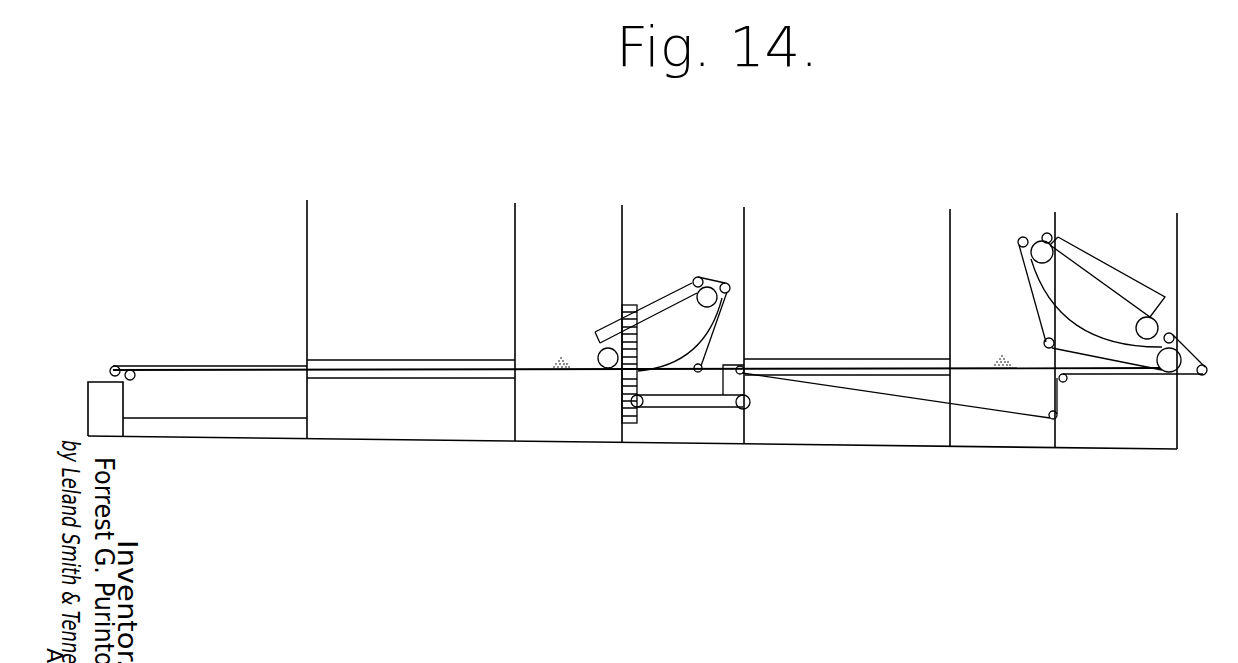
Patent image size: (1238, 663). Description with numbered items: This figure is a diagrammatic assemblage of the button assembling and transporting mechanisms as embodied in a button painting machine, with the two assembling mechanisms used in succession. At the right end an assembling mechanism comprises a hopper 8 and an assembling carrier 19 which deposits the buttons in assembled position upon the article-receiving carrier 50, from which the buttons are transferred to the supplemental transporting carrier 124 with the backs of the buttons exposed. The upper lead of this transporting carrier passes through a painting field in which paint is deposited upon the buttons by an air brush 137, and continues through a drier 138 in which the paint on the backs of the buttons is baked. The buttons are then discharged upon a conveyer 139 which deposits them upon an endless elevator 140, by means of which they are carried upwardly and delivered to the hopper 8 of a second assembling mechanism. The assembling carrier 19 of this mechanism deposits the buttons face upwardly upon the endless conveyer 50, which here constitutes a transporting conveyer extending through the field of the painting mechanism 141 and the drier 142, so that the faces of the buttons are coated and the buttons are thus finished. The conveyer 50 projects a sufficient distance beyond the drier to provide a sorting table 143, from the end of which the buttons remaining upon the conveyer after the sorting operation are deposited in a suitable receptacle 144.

The hopper 8 is at (656, 303).
The assembling carrier 19 is at (655, 317).
The article-receiving carrier 50 is at (433, 368).
The supplemental transporting carrier 124 is at (1135, 375).
The air brush 137 is at (1003, 354).
The drier 138 is at (843, 358).
The conveyer 139 is at (668, 397).
The endless elevator 140 is at (621, 390).
The painting mechanism 141 is at (562, 356).
The drier 142 is at (319, 390).
The sorting table 143 is at (220, 367).
The receptacle 144 is at (95, 382).